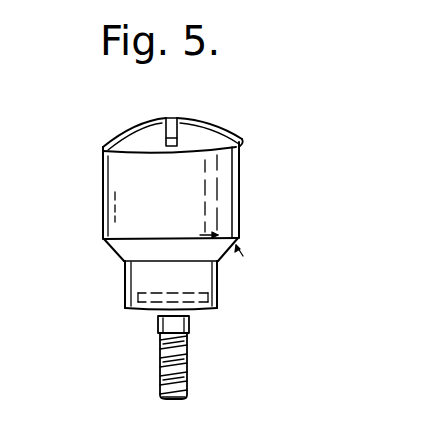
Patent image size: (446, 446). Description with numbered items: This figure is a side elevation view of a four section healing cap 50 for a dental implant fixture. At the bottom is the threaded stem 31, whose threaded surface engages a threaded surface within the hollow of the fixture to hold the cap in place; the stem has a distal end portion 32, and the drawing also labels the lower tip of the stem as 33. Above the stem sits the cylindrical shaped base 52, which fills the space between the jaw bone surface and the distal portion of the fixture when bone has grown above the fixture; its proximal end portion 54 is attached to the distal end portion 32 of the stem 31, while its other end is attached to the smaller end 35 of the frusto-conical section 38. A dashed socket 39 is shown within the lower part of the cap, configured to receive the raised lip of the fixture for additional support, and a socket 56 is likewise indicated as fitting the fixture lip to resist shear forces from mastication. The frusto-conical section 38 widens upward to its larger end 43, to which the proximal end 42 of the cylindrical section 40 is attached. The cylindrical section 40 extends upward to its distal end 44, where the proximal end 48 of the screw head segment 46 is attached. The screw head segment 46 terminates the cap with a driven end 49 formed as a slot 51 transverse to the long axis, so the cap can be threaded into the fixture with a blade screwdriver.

The stem 31 is at (188, 354).
The distal end portion of the stem 32 is at (192, 321).
The screw tip 33 is at (190, 391).
The smaller end of the frusto-conical section 35 is at (200, 299).
The frusto-conical section 38 is at (112, 250).
The socket 39 is at (124, 302).
The cylindrical section 40 is at (240, 184).
The proximal end of the cylindrical section 42 is at (240, 232).
The larger end of the frusto-conical section 43 is at (240, 238).
The distal end of the cylindrical section 44 is at (243, 152).
The screw head segment 46 is at (217, 132).
The proximal end of the screw head segment 48 is at (242, 130).
The driven end 49 is at (190, 122).
The four section healing cap 50 is at (191, 223).
The slot 51 is at (168, 118).
The cylindrical shaped base 52 is at (220, 284).
The proximal end portion of the base 54 is at (214, 306).
The socket 56 is at (222, 263).